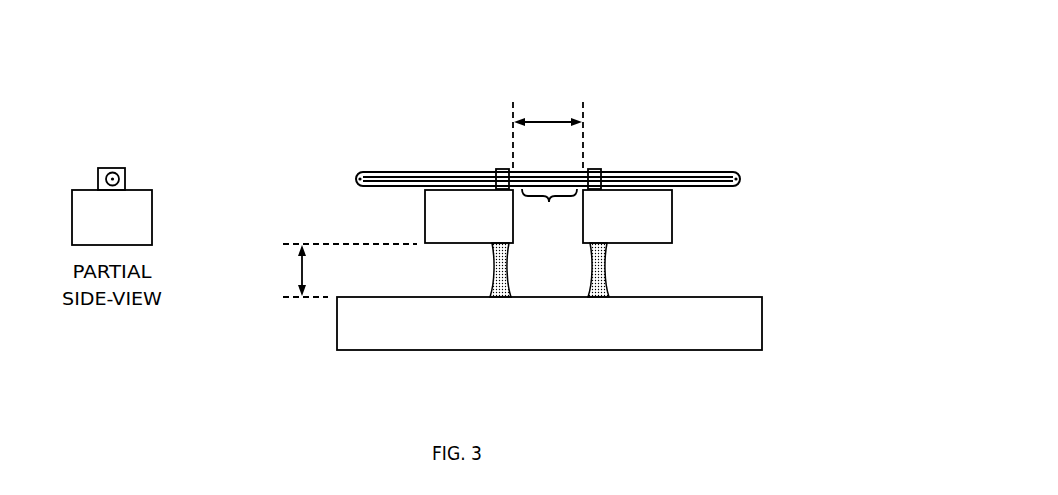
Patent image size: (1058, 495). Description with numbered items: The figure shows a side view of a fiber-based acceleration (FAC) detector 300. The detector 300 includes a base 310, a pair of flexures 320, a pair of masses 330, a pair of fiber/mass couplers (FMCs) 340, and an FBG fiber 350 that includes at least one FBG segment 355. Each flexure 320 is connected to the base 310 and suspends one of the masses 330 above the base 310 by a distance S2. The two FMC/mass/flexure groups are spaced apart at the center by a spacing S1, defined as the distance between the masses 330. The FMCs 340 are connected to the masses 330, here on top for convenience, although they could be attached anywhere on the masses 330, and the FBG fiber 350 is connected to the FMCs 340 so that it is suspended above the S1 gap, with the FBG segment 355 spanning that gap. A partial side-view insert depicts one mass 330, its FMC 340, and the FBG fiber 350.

The fiber-based acceleration (FAC) detector 300 is at (399, 204).
The base 310 is at (593, 333).
The flexure 320 is at (493, 270).
The mass 330 is at (423, 217).
The fiber/mass coupler (FMC) 340 is at (503, 168).
The FBG fiber 350 is at (655, 170).
The FBG segment 355 is at (549, 209).